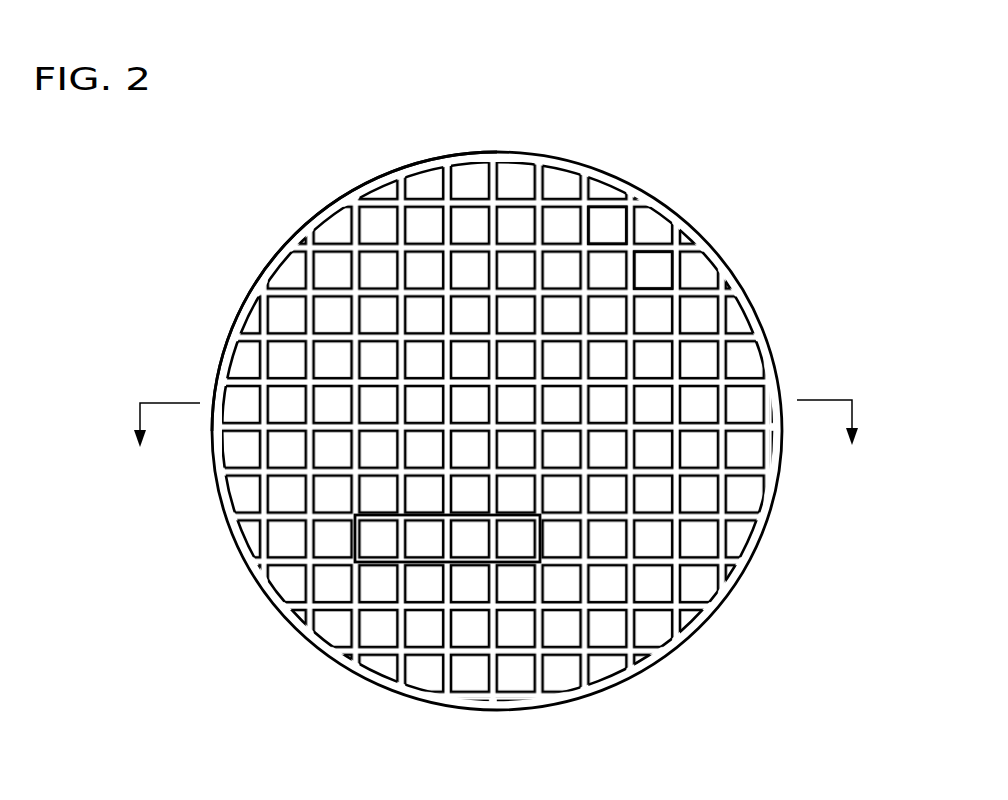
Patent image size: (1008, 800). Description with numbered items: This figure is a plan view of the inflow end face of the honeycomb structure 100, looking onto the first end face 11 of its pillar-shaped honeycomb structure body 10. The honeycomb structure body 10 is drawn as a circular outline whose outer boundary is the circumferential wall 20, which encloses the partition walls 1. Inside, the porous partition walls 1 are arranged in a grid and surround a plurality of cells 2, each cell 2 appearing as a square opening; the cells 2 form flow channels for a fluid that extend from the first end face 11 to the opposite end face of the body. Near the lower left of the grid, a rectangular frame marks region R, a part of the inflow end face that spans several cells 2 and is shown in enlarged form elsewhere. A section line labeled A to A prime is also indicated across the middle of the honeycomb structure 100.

The honeycomb structure 100 is at (848, 117).
The honeycomb structure body 10 is at (790, 370).
The first end face 11 is at (295, 208).
The circumferential wall 20 is at (720, 597).
The partition walls 1 is at (603, 248).
The cells 2 is at (652, 268).
The region R is at (402, 547).